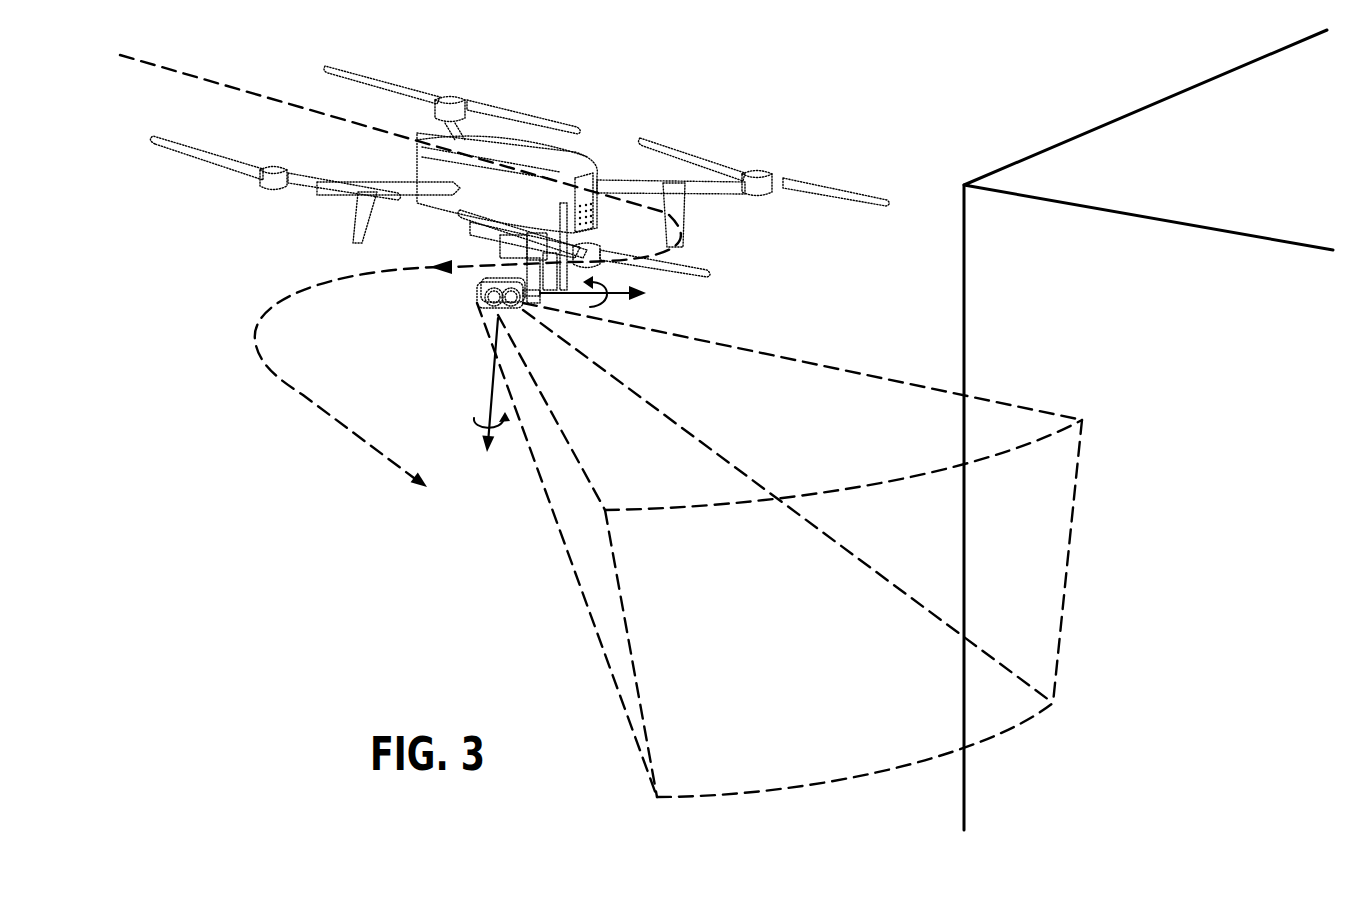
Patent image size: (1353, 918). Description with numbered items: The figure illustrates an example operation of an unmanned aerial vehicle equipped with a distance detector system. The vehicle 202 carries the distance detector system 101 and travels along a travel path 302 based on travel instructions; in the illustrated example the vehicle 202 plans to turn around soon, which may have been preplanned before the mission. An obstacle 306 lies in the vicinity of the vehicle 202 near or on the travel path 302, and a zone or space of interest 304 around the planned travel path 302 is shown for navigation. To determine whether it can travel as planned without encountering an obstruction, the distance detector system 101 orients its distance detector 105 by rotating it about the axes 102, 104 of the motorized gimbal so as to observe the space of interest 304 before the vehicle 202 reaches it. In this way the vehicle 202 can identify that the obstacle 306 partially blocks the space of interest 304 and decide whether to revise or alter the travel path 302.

The vehicle 202 is at (580, 84).
The obstacle 306 is at (1063, 143).
The space of interest 304 is at (847, 368).
The travel path 302 is at (292, 380).
The distance detector 105 is at (472, 282).
The distance detector system 101 is at (473, 350).
The axis 104 is at (611, 296).
The axis 102 is at (493, 374).